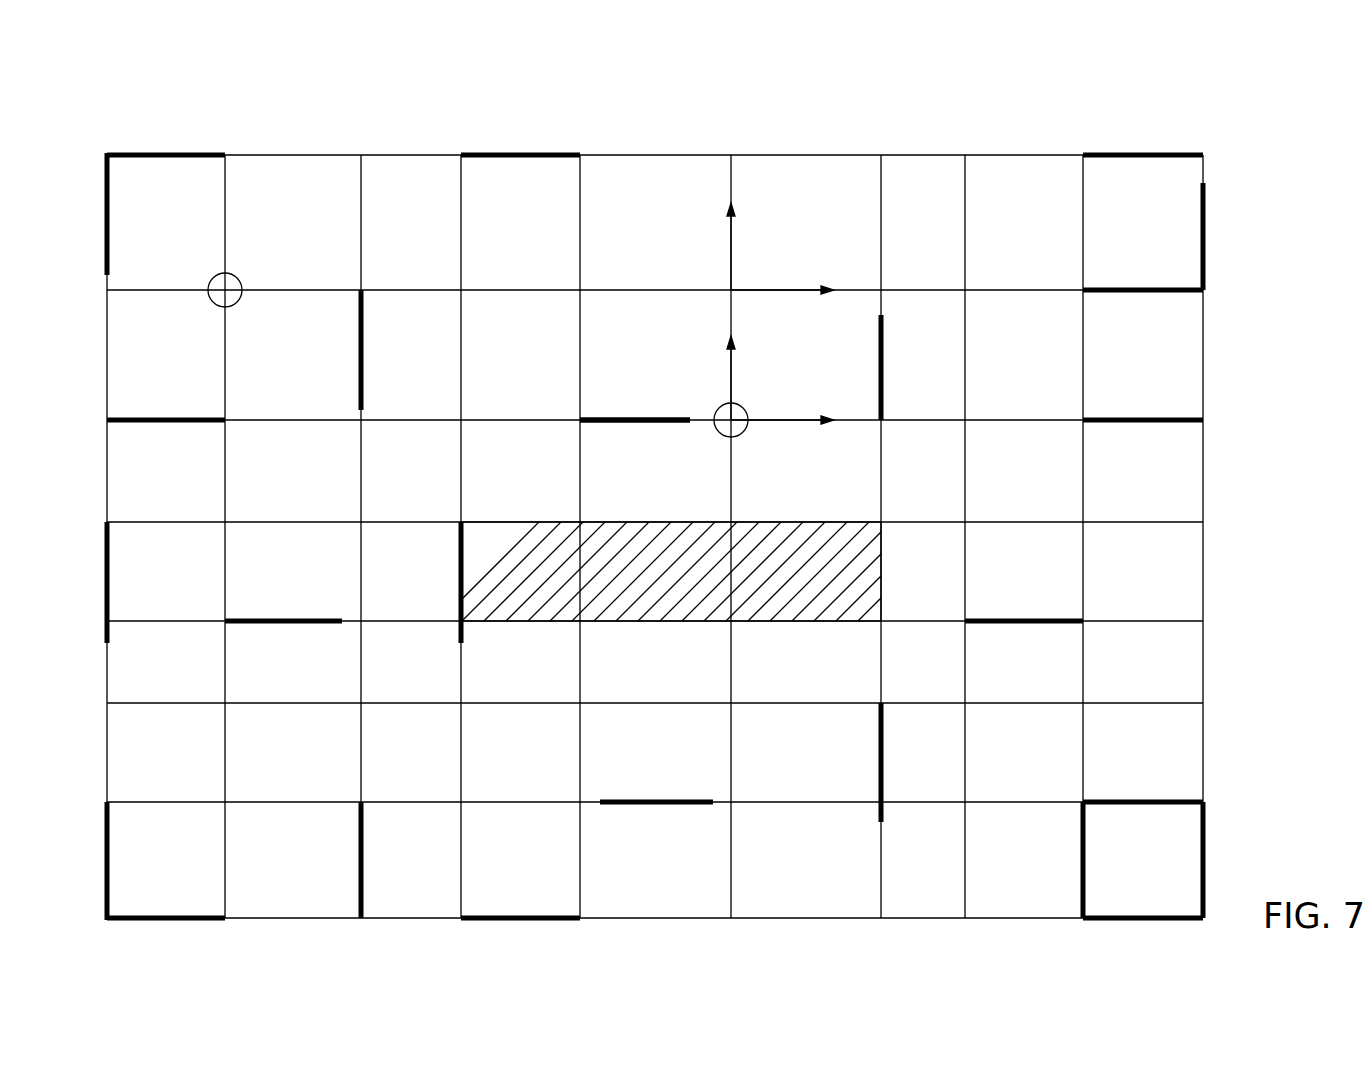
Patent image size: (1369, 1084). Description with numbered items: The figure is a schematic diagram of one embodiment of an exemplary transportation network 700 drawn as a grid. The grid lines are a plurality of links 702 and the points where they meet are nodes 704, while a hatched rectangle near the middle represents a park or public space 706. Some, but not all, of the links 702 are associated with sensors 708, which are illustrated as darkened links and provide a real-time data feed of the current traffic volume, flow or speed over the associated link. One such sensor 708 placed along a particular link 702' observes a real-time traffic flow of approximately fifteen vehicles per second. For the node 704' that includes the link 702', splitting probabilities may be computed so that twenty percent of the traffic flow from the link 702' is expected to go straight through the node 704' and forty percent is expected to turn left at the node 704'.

The transportation network 700 is at (90, 152).
The link 702 is at (655, 511).
The link 702' is at (647, 429).
The node 704 is at (263, 316).
The node 704' is at (773, 444).
The park or public space 706 is at (686, 588).
The sensor 708 is at (508, 154).